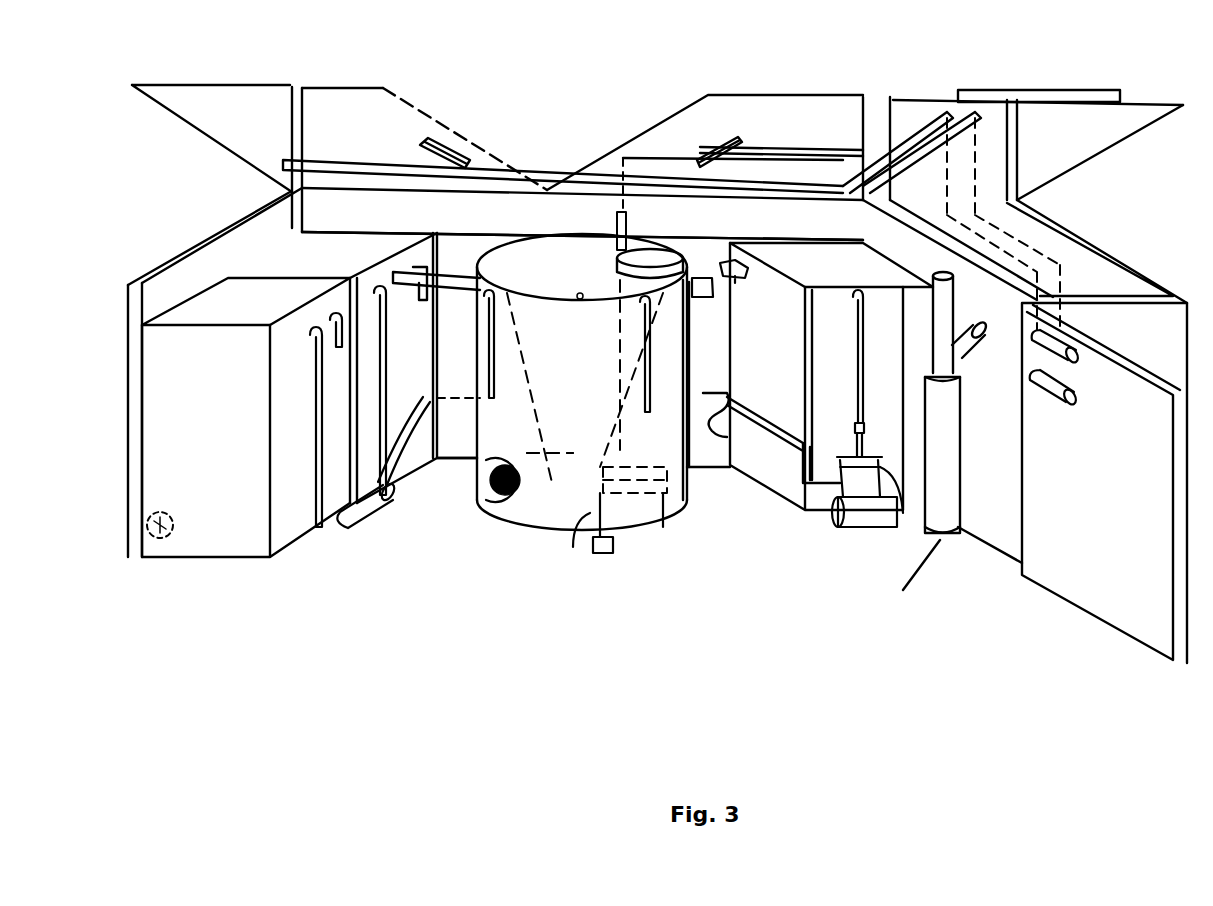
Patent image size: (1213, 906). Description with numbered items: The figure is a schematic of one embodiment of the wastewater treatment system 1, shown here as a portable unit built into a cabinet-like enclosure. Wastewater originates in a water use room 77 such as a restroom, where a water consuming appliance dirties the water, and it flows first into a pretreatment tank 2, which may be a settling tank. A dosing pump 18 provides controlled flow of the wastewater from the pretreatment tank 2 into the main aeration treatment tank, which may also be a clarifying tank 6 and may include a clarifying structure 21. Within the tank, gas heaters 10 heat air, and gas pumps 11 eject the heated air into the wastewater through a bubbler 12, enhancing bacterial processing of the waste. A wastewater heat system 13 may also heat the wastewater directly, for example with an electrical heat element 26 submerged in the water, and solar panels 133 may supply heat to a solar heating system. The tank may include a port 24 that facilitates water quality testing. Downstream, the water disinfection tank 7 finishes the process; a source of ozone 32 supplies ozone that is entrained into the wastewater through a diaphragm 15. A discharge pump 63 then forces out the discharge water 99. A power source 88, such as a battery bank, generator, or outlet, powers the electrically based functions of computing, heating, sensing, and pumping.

The wastewater treatment system 1 is at (292, 678).
The pretreatment tank 2 is at (273, 260).
The clarifying tank 6 is at (527, 545).
The water disinfection tank 7 is at (787, 243).
The gas heater 10 is at (710, 150).
The gas pump 11 is at (1076, 380).
The bubbler 12 is at (490, 488).
The wastewater heat system 13 is at (583, 538).
The diaphragm 15 is at (484, 480).
The dosing pump 18 is at (360, 519).
The clarifying structure 21 is at (537, 477).
The port 24 is at (577, 296).
The electrical heat element 26 is at (637, 515).
The source of ozone 32 is at (940, 540).
The discharge pump 63 is at (853, 540).
The water use room 77 is at (1086, 274).
The power source 88 is at (153, 557).
The discharge water 99 is at (703, 435).
The solar panels 133 is at (1080, 88).